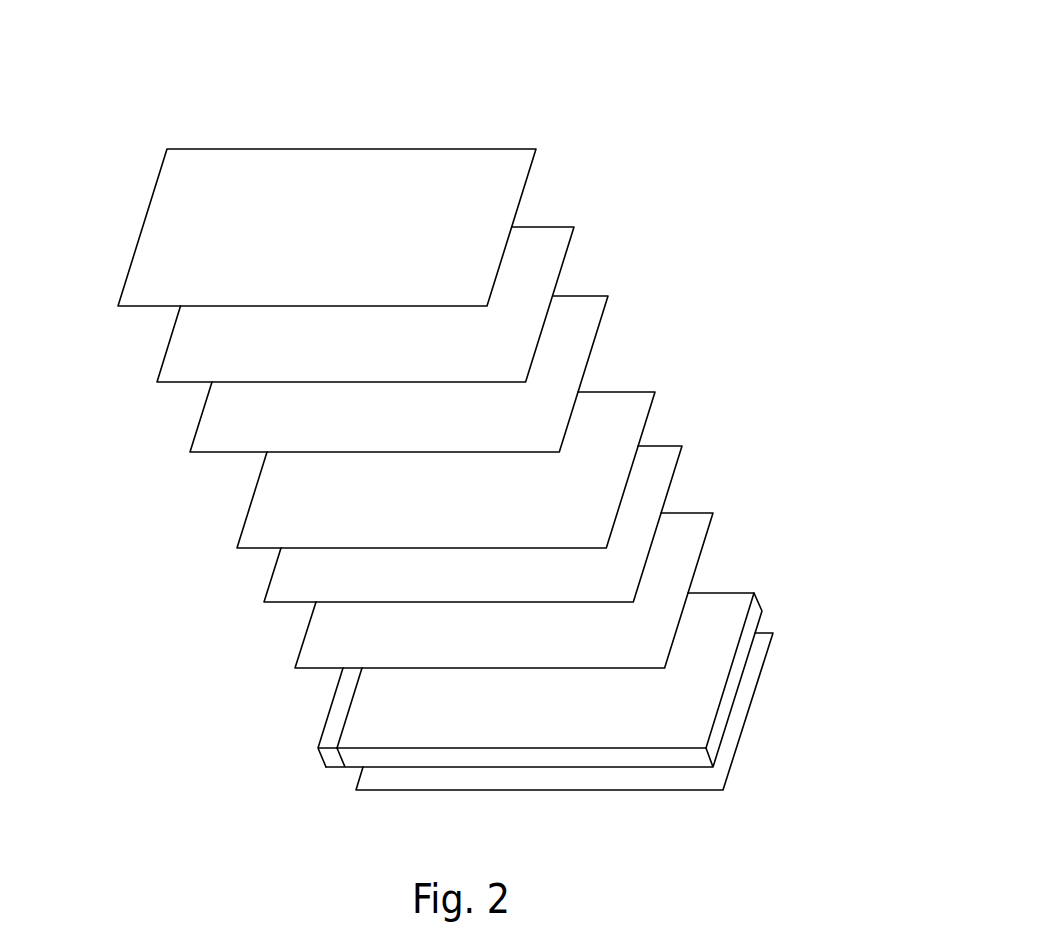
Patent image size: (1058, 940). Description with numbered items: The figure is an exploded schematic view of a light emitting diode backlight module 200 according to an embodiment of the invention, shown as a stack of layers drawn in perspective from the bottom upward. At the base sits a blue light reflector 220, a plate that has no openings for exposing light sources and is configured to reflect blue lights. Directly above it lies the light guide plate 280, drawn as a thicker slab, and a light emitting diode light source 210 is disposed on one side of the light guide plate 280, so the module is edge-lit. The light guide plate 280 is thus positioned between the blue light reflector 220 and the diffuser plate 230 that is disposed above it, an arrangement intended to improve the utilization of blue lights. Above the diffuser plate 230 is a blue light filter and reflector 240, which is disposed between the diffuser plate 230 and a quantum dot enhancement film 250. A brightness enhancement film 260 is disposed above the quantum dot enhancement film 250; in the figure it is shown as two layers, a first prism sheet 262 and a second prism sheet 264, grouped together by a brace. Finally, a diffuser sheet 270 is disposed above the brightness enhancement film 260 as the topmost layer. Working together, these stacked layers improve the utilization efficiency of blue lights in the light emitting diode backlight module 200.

The light emitting diode backlight module 200 is at (86, 82).
The light emitting diode light source 210 is at (328, 755).
The blue light reflector 220 is at (752, 657).
The light guide plate 280 is at (546, 663).
The diffuser plate 230 is at (692, 535).
The blue light filter and reflector 240 is at (660, 470).
The quantum dot enhancement film 250 is at (632, 415).
The brightness enhancement film 260 is at (487, 337).
The first prism sheet 262 is at (587, 317).
The second prism sheet 264 is at (552, 250).
The diffuser sheet 270 is at (513, 173).